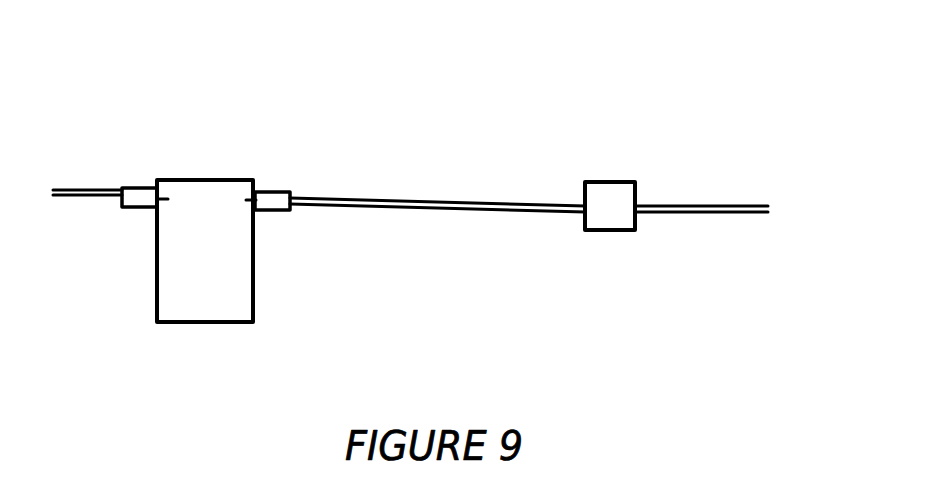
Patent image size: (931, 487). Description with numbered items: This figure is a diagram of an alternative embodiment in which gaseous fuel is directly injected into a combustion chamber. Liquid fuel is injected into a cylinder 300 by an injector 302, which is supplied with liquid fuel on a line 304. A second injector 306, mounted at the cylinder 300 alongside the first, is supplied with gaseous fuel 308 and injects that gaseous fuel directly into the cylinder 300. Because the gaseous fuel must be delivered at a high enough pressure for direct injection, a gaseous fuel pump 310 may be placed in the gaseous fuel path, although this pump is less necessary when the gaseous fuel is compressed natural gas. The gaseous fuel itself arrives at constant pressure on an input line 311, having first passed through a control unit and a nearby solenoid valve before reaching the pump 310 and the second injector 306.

The cylinder 300 is at (257, 275).
The injector 302 is at (141, 188).
The line 304 is at (73, 192).
The second injector 306 is at (270, 192).
The gaseous fuel 308 is at (423, 200).
The gaseous fuel pump 310 is at (613, 182).
The input line 311 is at (705, 203).